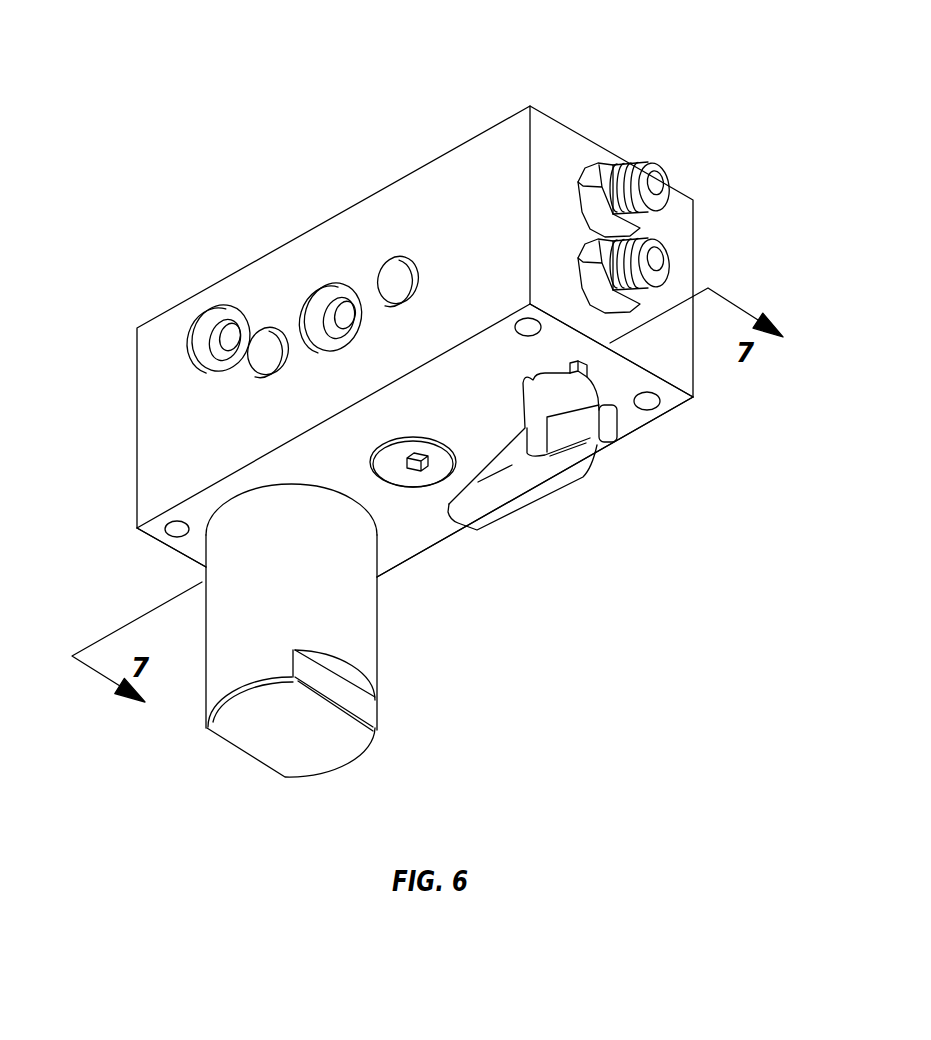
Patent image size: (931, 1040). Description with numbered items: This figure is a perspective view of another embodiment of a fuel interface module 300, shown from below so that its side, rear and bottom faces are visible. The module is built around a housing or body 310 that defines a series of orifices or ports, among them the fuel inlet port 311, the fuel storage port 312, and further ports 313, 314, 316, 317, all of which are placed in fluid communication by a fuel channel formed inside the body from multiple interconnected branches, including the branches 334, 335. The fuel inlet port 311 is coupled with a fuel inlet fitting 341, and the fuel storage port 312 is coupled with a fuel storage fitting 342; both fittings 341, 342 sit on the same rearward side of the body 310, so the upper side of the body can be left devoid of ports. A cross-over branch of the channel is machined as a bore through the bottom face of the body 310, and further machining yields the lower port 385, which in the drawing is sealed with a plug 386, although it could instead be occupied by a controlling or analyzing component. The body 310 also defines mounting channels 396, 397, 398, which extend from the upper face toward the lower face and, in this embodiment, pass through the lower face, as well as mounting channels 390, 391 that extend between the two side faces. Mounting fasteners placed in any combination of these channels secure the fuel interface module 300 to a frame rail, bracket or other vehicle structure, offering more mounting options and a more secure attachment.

The fuel interface module 300 is at (128, 95).
The body 310 is at (497, 148).
The fuel inlet port 311 is at (583, 160).
The fuel storage port 312 is at (660, 303).
The port 313 is at (612, 379).
The port 314 is at (188, 556).
The port 316 is at (195, 321).
The port 317 is at (314, 292).
The branch 334 is at (233, 343).
The branch 335 is at (338, 307).
The fuel inlet fitting 341 is at (650, 163).
The fuel storage fitting 342 is at (667, 252).
The lower port 385 is at (410, 508).
The plug 386 is at (435, 473).
The mounting channel 390 is at (259, 320).
The mounting channel 391 is at (386, 248).
The mounting channel 396 is at (160, 537).
The mounting channel 397 is at (515, 316).
The mounting channel 398 is at (643, 420).